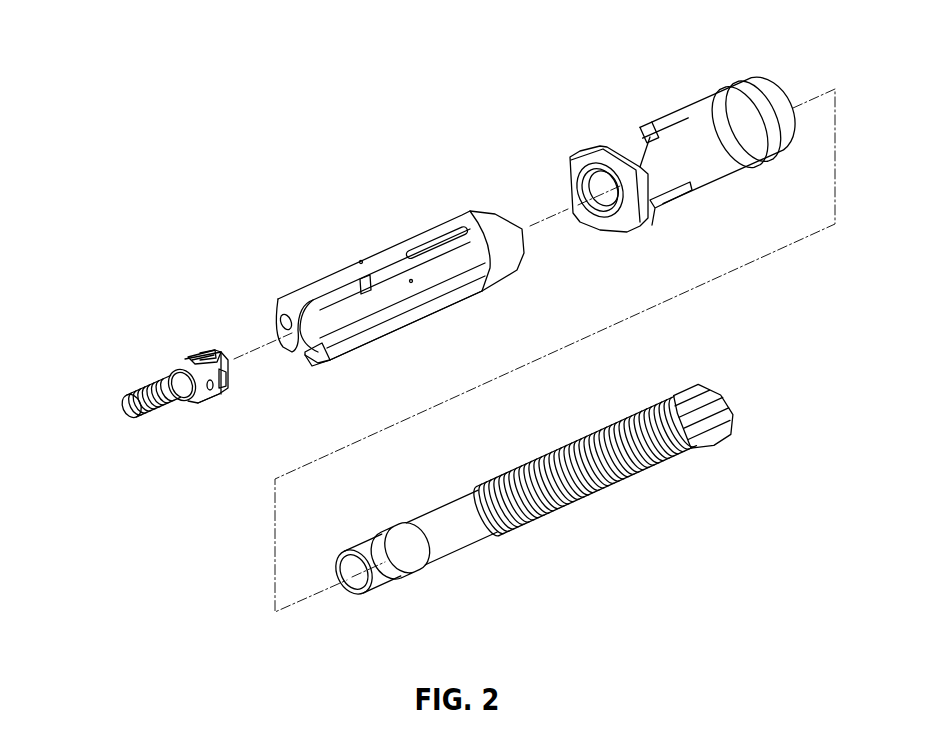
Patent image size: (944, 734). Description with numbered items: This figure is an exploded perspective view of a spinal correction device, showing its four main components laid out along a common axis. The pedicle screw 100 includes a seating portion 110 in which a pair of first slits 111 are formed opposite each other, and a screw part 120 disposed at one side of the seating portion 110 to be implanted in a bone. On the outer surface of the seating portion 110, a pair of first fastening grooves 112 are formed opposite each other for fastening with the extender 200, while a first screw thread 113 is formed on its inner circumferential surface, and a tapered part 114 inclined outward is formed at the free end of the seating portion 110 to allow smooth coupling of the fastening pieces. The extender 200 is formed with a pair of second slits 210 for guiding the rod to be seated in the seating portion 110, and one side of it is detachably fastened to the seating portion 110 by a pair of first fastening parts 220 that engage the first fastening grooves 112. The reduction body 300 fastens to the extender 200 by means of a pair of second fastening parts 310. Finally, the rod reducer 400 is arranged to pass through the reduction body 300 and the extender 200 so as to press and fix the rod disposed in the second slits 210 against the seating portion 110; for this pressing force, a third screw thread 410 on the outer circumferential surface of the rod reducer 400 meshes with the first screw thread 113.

The pedicle screw 100 is at (182, 403).
The seating portion 110 is at (212, 368).
The first slits 111 is at (212, 352).
The first fastening grooves 112 is at (227, 397).
The first screw thread 113 is at (200, 350).
The tapered part 114 is at (233, 377).
The screw part 120 is at (142, 383).
The extender 200 is at (408, 270).
The second slits 210 is at (397, 268).
The first fastening parts 220 is at (466, 281).
The reduction body 300 is at (685, 131).
The second fastening parts 310 is at (681, 189).
The rod reducer 400 is at (553, 535).
The third screw thread 410 is at (637, 475).